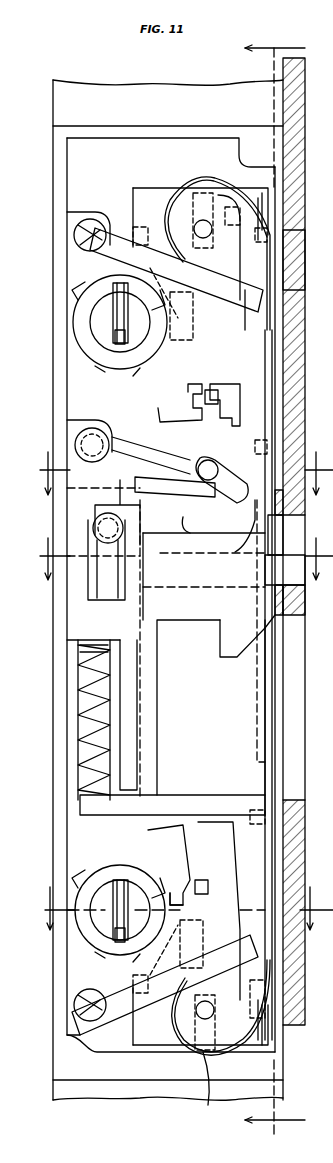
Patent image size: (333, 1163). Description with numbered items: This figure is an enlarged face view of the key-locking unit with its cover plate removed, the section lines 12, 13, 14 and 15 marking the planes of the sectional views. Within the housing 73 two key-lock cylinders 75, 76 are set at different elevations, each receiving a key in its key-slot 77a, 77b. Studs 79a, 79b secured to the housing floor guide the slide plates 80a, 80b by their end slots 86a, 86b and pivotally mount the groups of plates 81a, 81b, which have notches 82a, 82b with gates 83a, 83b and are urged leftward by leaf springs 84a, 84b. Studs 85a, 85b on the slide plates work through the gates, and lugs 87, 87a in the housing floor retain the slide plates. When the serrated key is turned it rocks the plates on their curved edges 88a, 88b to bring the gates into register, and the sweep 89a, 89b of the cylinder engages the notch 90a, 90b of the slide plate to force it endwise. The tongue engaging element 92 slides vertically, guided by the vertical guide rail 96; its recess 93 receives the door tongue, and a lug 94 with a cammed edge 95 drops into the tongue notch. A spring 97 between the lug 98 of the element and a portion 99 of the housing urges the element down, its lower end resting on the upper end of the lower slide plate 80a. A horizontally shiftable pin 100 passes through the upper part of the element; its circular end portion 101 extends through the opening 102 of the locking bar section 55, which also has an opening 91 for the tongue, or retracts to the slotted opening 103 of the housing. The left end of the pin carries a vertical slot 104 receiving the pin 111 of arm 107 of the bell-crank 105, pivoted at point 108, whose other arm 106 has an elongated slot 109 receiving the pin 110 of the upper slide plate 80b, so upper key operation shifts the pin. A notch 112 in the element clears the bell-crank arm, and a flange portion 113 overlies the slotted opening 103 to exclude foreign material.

The section line 12 is at (275, 588).
The section line 13 is at (183, 473).
The section line 14 is at (183, 559).
The section line 15 is at (183, 908).
The section of the vertical locking bar 55 is at (295, 238).
The housing 73 is at (288, 376).
The key-lock cylinder 75 is at (92, 934).
The key-lock cylinder 76 is at (88, 352).
The key-slot 77a is at (117, 935).
The key-slot 77b is at (117, 330).
The stud 79a is at (200, 1013).
The stud 79b is at (205, 236).
The slide plate 80a is at (255, 1055).
The slide plate 80b is at (260, 195).
The plates 81a is at (200, 933).
The plates 81b is at (200, 278).
The notch 82a is at (178, 910).
The notch 82b is at (188, 390).
The gate 83a is at (190, 860).
The gate 83b is at (203, 410).
The leaf spring 84a is at (250, 1040).
The leaf spring 84b is at (262, 205).
The stud 85a is at (206, 880).
The stud 85b is at (216, 393).
The end slot 86a is at (221, 1039).
The end slot 86b is at (190, 192).
The lug 87 is at (270, 228).
The lug 87a is at (265, 1015).
The curved edge 88a is at (118, 942).
The curved edge 88b is at (118, 342).
The sweep 89a is at (105, 1012).
The sweep 89b is at (92, 255).
The notch 90a is at (193, 930).
The notch 90b is at (193, 312).
The opening 91 is at (293, 685).
The tongue engaging element 92 is at (204, 576).
The recess 93 is at (160, 692).
The lug 94 is at (222, 653).
The cammed edge 95 is at (237, 657).
The vertical guide rail 96 is at (125, 712).
The spring 97 is at (80, 765).
The lug 98 is at (100, 805).
The portion of the housing 99 is at (80, 657).
The pin 100 is at (228, 590).
The circular end portion 101 is at (290, 562).
The opening 102 is at (305, 590).
The slotted opening 103 is at (276, 518).
The vertical slot 104 is at (104, 580).
The bell-crank 105 is at (128, 452).
The bell-crank arm 106 is at (165, 462).
The bell-crank arm 107 is at (110, 497).
The pivot point 108 is at (75, 440).
The elongated slot 109 is at (220, 495).
The pin 110 is at (208, 470).
The pin 111 is at (106, 550).
The notch 112 is at (192, 526).
The flange portion 113 is at (262, 522).